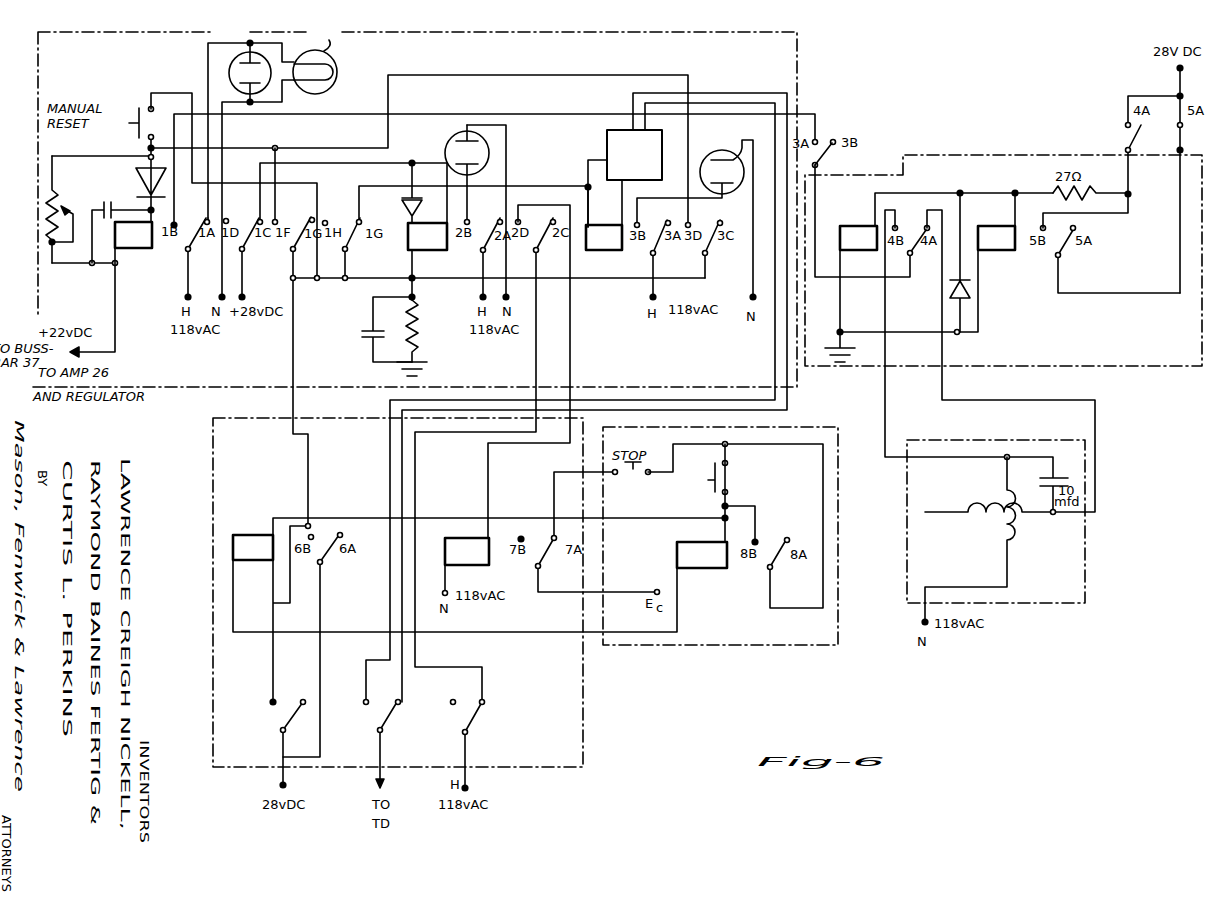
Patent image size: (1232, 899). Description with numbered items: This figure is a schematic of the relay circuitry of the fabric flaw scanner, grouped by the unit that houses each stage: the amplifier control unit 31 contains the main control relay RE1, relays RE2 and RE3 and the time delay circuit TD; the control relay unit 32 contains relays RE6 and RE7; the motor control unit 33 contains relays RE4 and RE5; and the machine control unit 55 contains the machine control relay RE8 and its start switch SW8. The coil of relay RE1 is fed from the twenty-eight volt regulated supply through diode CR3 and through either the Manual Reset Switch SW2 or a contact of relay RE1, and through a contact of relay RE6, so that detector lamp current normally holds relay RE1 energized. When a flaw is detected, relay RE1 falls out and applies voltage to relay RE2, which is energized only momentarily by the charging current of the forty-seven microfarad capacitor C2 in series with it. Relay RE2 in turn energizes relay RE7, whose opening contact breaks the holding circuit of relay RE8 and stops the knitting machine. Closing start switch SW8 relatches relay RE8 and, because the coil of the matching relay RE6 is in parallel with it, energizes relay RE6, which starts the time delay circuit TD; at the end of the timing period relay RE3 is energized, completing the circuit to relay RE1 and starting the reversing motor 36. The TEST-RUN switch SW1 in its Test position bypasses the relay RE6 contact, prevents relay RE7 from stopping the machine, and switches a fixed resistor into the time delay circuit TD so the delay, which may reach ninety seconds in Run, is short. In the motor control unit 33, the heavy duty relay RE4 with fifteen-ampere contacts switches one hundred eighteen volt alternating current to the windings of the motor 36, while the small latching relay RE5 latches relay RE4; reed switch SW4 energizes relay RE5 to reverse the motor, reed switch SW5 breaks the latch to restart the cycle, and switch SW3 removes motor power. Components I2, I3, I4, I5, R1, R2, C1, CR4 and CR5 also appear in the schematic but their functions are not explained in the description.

The amplifier control unit 31 is at (799, 70).
The control relay unit 32 is at (585, 711).
The motor control unit 33 is at (1138, 366).
The drive motor 36 is at (1087, 556).
The machine control unit 55 is at (777, 648).
The indicator tube I2 is at (248, 65).
The indicator tube I3 is at (459, 173).
The indicator tube I4 is at (696, 210).
The indicator lamp I5 is at (315, 60).
The potentiometer R1 is at (47, 209).
The resistor R2 is at (424, 333).
The capacitor C1 is at (121, 216).
The capacitor C2 is at (375, 329).
The diode CR3 is at (138, 159).
The diode CR4 is at (394, 191).
The diode CR5 is at (972, 291).
The main control relay RE1 is at (111, 289).
The relay RE2 is at (427, 236).
The relay RE3 is at (604, 237).
The heavy duty relay RE4 is at (858, 238).
The latching relay RE5 is at (996, 238).
The matching relay RE6 is at (253, 547).
The relay RE7 is at (467, 551).
The machine control relay RE8 is at (702, 555).
The TEST-RUN switch SW1 is at (362, 736).
The Manual Reset Switch SW2 is at (214, 181).
The reversing motor switch SW3 is at (839, 156).
The reed switch SW4 is at (1126, 144).
The reed switch SW5 is at (1197, 179).
The start switch SW8 is at (722, 492).
The time delay circuit TD is at (634, 155).